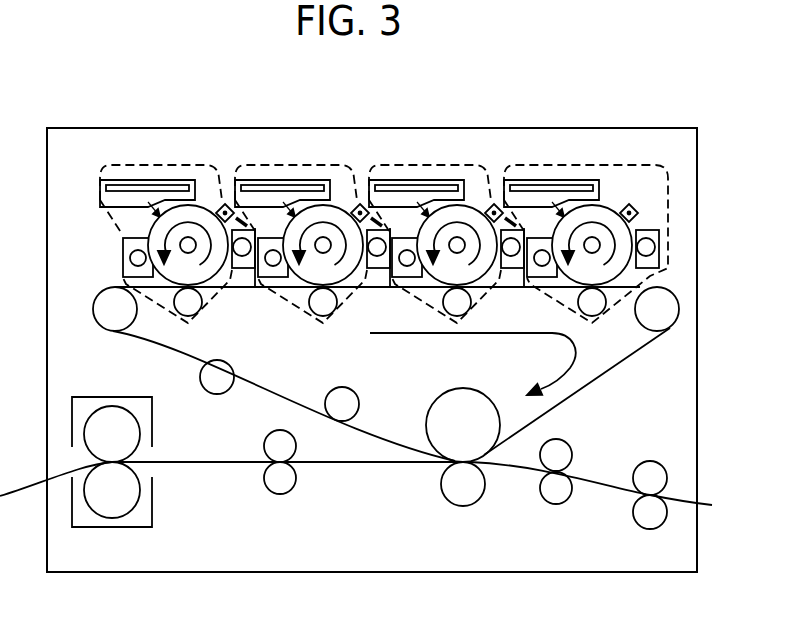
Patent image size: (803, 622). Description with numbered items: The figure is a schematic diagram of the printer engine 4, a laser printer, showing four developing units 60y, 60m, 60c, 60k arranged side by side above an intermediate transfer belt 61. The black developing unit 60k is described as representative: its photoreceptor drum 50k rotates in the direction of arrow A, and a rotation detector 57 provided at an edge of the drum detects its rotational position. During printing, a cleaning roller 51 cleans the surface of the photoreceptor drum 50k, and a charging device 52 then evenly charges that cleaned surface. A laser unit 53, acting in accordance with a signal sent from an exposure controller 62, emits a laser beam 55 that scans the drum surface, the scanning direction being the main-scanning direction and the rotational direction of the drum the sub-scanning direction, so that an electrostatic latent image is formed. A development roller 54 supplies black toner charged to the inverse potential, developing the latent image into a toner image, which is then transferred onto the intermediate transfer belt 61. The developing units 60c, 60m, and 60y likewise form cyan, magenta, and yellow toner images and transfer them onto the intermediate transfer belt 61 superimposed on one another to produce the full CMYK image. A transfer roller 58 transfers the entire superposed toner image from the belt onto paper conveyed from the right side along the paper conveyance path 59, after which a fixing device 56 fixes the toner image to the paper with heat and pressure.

The printer engine 4 is at (97, 128).
The developing unit 60y is at (145, 165).
The developing unit 60m is at (281, 165).
The developing unit 60c is at (415, 165).
The developing unit 60k is at (615, 204).
The photoreceptor drum 50k is at (667, 177).
The cleaning roller 51 is at (660, 244).
The charging device 52 is at (639, 212).
The laser unit 53 is at (532, 178).
The development roller 54 is at (543, 250).
The laser beam 55 is at (558, 200).
The fixing device 56 is at (97, 397).
The rotation detector 57 is at (600, 251).
The transfer roller 58 is at (436, 400).
The paper conveyance path 59 is at (362, 464).
The intermediate transfer belt 61 is at (583, 393).
The exposure controller 62 is at (580, 186).